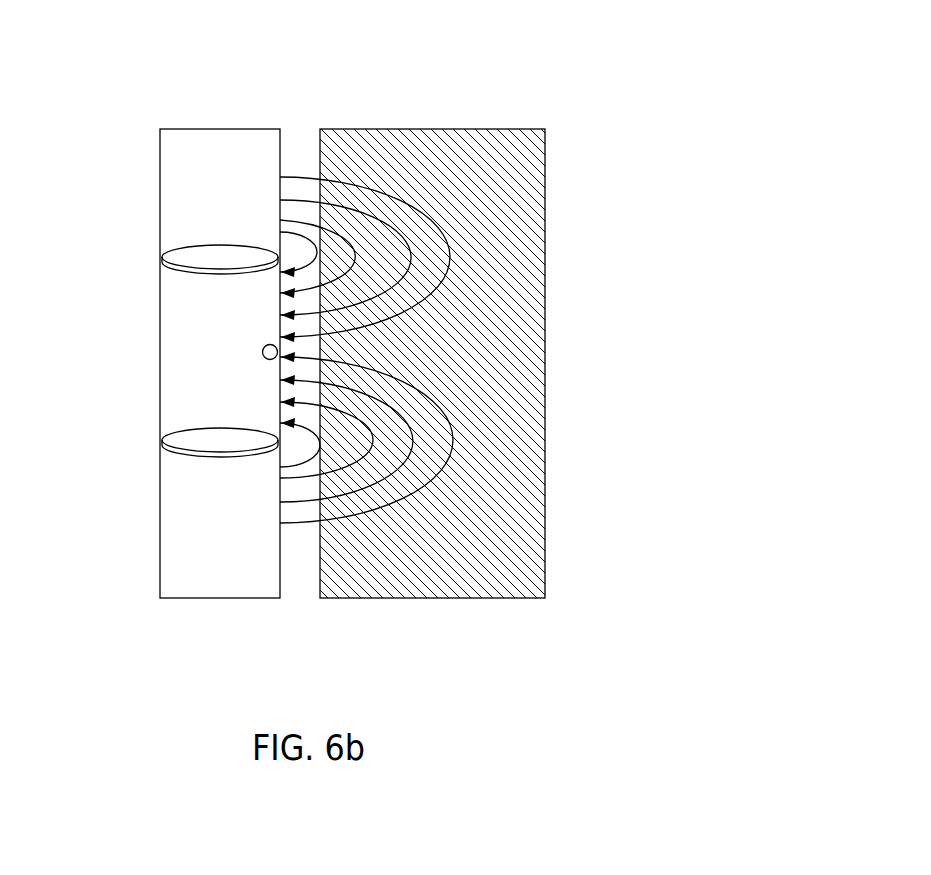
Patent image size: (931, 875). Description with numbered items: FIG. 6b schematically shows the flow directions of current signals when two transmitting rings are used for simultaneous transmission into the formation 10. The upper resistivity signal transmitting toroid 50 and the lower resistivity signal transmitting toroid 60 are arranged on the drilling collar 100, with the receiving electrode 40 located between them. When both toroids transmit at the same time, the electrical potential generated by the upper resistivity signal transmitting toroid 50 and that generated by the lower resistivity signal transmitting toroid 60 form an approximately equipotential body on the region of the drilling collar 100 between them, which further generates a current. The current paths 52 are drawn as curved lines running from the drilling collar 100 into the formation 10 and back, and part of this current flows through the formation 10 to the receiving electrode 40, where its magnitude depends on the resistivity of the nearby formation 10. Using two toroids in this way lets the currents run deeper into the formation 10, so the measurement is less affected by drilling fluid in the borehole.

The drilling collar 100 is at (221, 152).
The formation 10 is at (480, 260).
The upper resistivity signal transmitting toroid 50 is at (170, 262).
The lower resistivity signal transmitting toroid 60 is at (190, 456).
The receiving electrode 40 is at (262, 351).
The current field lines 52 is at (294, 228).